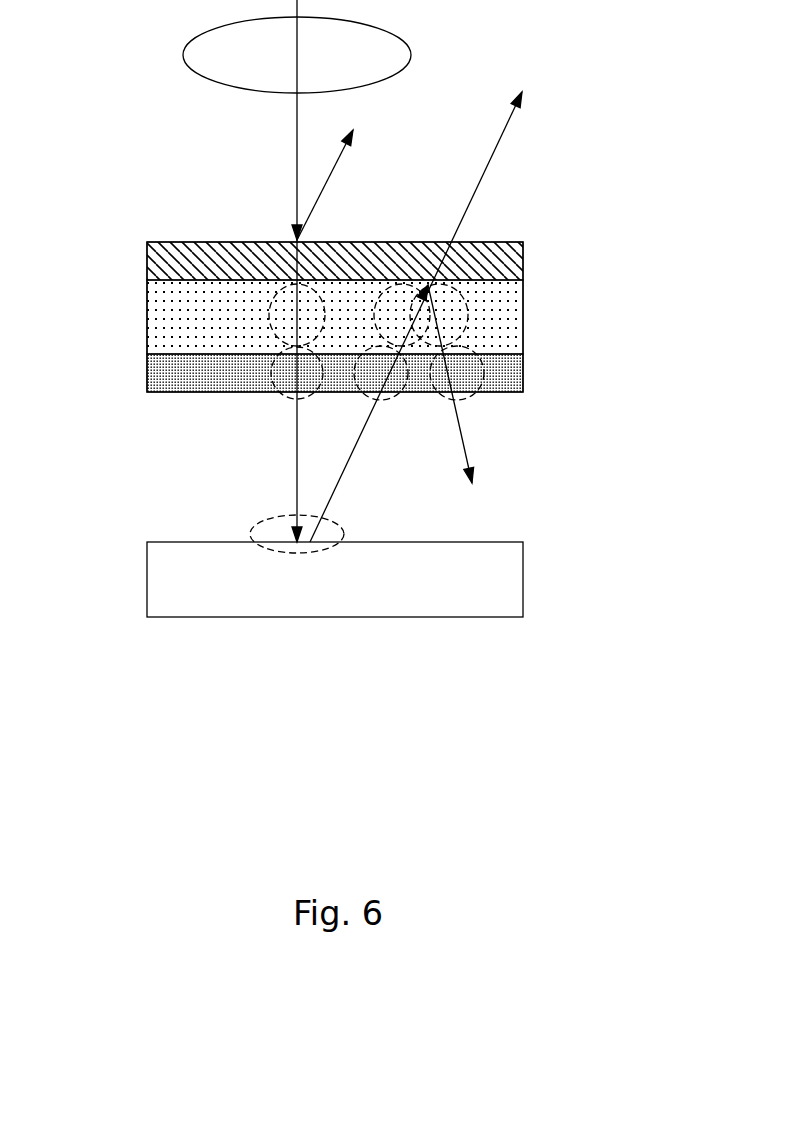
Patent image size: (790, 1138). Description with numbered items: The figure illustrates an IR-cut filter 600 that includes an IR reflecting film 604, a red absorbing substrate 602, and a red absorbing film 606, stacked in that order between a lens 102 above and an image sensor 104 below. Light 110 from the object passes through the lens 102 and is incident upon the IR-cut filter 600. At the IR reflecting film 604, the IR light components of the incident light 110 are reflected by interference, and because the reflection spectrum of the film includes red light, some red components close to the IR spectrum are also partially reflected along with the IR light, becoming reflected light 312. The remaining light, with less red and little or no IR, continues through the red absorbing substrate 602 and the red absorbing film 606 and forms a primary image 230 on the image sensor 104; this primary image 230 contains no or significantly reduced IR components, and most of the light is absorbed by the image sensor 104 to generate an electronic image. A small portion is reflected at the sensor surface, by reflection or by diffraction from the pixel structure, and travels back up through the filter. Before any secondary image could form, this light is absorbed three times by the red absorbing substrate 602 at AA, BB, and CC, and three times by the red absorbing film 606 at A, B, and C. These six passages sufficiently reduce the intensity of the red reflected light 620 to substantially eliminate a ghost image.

The lens 102 is at (252, 66).
The incident light 110 is at (238, 271).
The reflected light 312 is at (328, 187).
The IR-cut filter 600 is at (524, 317).
The IR reflecting film 604 is at (147, 260).
The red absorbing substrate 602 is at (147, 317).
The red absorbing film 606 is at (147, 373).
The red reflected light 620 is at (462, 427).
The primary image 230 is at (317, 548).
The image sensor 104 is at (203, 594).